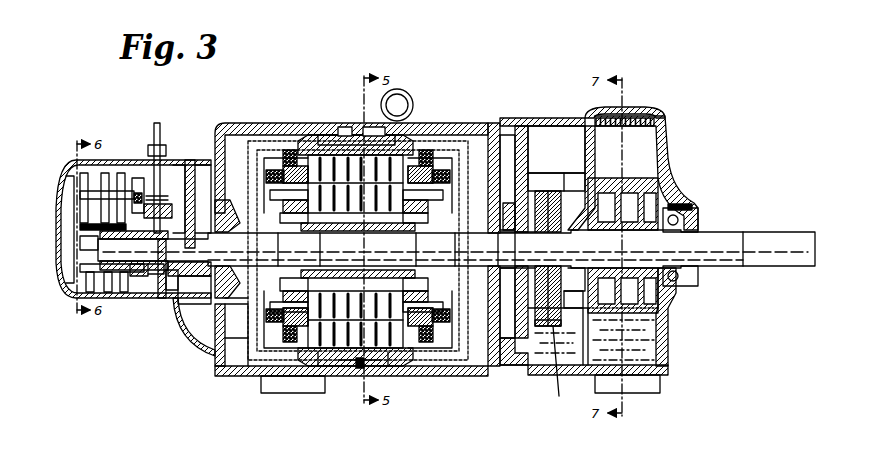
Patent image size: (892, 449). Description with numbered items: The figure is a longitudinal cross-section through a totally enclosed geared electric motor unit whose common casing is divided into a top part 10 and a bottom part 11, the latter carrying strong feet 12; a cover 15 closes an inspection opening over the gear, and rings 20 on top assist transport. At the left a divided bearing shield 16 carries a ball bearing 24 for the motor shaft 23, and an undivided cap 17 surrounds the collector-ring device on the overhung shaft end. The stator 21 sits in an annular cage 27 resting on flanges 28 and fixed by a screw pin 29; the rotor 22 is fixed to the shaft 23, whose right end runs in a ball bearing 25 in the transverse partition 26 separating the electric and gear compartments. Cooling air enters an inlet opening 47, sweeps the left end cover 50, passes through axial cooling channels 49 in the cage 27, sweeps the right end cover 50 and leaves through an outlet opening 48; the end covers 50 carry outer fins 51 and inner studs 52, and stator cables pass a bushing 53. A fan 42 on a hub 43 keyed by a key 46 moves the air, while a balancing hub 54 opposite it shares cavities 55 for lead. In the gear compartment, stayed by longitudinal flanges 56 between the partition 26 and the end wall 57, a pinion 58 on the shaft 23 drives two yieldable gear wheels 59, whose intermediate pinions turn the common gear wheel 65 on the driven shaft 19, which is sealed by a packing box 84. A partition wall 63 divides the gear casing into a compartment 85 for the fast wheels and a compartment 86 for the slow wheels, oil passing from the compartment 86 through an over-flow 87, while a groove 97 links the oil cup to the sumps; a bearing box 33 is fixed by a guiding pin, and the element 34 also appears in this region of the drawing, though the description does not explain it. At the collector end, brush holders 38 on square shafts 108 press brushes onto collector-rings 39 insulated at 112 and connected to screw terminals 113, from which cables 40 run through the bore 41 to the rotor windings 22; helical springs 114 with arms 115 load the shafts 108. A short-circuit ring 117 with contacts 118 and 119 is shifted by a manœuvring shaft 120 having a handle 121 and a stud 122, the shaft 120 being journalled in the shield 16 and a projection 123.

The top part of casing 10 is at (262, 120).
The bottom part of casing 11 is at (420, 368).
The feet 12 is at (268, 385).
The cover 15 is at (630, 100).
The bearing shield 16 is at (183, 330).
The cap 17 is at (62, 156).
The driven shaft 19 is at (730, 228).
The rings 20 is at (400, 86).
The stator 21 is at (400, 148).
The rotor 22 is at (345, 358).
The motor shaft 23 is at (272, 268).
The ball bearing 24 is at (194, 290).
The ball bearing 25 is at (514, 351).
The transverse partition 26 is at (528, 148).
The annular casing or cage 27 is at (306, 370).
The flanges 28 is at (338, 127).
The screw pin 29 is at (352, 360).
The bearing box 33 is at (522, 274).
The chamber partition 34 is at (556, 182).
The brush holders 38 is at (85, 180).
The collector-rings 39 is at (75, 236).
The cables 40 is at (80, 262).
The bore 41 is at (145, 292).
The fan 42 is at (505, 160).
The hub 43 is at (500, 290).
The key 46 is at (500, 190).
The inlet opening 47 is at (222, 368).
The outlet opening 48 is at (512, 367).
The cooling channels 49 is at (318, 135).
The end covers 50 is at (243, 133).
The cooling ribs or fins 51 is at (232, 160).
The projections or studs 52 is at (275, 152).
The bushing 53 is at (497, 195).
The hub 54 is at (226, 292).
The cavities 55 is at (222, 192).
The longitudinal flanges 56 is at (548, 166).
The end wall 57 is at (662, 140).
The pinion 58 is at (580, 195).
The gear wheels 59 is at (545, 320).
The partition wall 63 is at (558, 357).
The gear wheel 65 is at (623, 245).
The packing box 84 is at (690, 208).
The compartment 85 is at (557, 368).
The compartment 86 is at (652, 348).
The over-flow 87 is at (573, 299).
The groove 97 is at (587, 150).
The square shaft 108 is at (105, 182).
The insulation 112 is at (70, 185).
The screw terminal 113 is at (78, 250).
The helical spring 114 is at (132, 176).
The arm 115 is at (118, 292).
The short-circuit ring 117 is at (160, 282).
The short-circuit contact 118 is at (142, 276).
The short-circuit contact 119 is at (135, 280).
The manœuvring shaft 120 is at (158, 175).
The handle 121 is at (149, 125).
The stud 122 is at (170, 272).
The projection 123 is at (180, 150).